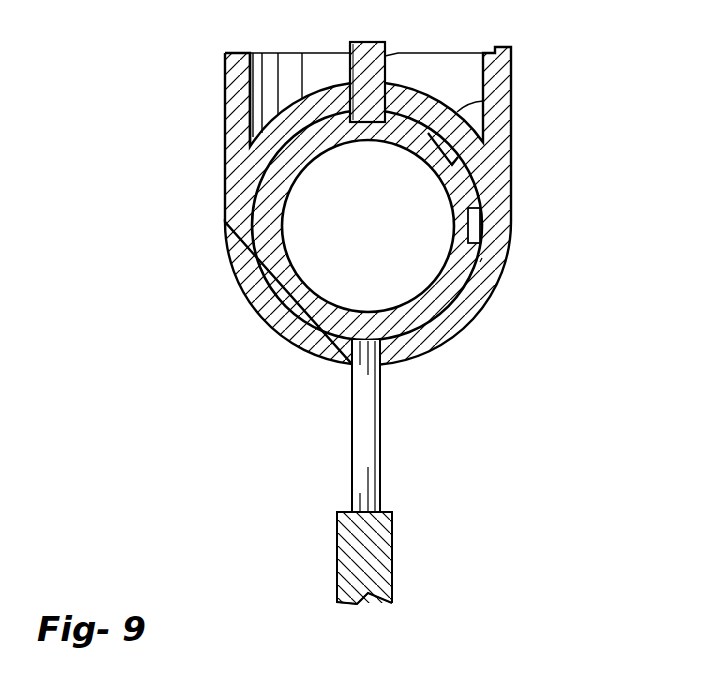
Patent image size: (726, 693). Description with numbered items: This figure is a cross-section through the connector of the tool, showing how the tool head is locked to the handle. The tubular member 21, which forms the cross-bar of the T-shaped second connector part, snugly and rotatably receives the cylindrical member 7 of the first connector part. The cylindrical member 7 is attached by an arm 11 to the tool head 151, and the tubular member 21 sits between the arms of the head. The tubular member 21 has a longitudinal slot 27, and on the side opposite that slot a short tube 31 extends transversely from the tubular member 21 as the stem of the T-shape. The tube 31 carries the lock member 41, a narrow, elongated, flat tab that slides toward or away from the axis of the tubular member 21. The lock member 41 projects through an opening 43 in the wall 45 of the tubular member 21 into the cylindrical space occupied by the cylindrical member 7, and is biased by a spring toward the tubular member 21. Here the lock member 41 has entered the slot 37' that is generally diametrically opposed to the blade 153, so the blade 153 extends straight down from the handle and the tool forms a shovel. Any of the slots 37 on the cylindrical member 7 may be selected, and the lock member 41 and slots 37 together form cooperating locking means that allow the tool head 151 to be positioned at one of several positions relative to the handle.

The tubular member 21 is at (497, 293).
The slot 37 is at (439, 225).
The slot 37' is at (215, 142).
The wall 45 is at (470, 99).
The cylindrical member 7 is at (480, 260).
The lock member 41 is at (385, 47).
The tube 31 is at (225, 61).
The opening 43 is at (340, 96).
The arm 11 is at (357, 445).
The longitudinal slot 27 is at (351, 371).
The tool head 151 is at (337, 548).
The blade 153 is at (342, 568).